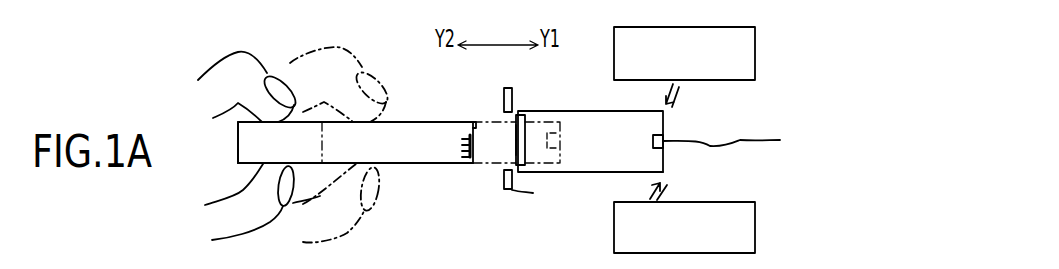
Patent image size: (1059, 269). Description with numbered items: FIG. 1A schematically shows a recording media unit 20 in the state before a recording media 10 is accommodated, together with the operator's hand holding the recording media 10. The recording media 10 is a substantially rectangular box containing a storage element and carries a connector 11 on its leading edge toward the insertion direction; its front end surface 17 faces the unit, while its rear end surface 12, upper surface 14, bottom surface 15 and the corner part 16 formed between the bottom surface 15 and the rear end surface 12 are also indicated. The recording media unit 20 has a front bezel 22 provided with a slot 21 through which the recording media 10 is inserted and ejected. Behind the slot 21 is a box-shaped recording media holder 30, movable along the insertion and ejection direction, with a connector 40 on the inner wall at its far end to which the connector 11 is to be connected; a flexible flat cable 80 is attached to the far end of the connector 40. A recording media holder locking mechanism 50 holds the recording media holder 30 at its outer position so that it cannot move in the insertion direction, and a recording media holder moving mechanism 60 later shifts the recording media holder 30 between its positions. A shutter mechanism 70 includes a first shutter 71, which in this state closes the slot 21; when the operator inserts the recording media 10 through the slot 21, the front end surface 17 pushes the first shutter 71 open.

The recording media 10 is at (427, 112).
The connector 11 is at (453, 163).
The end surface 12 is at (236, 152).
The upper surface 14 is at (393, 118).
The bottom surface 15 is at (402, 165).
The corner part 16 is at (237, 168).
The front end surface 17 is at (471, 121).
The recording media unit 20 is at (594, 98).
The slot 21 is at (515, 158).
The front bezel 22 is at (527, 158).
The recording media holder 30 is at (597, 172).
The connector 40 is at (665, 138).
The recording media holder locking mechanism 50 is at (755, 44).
The recording media holder moving mechanism 60 is at (756, 202).
The shutter mechanism 70 is at (508, 127).
The first shutter 71 is at (517, 147).
The flexible flat cable 80 is at (741, 140).